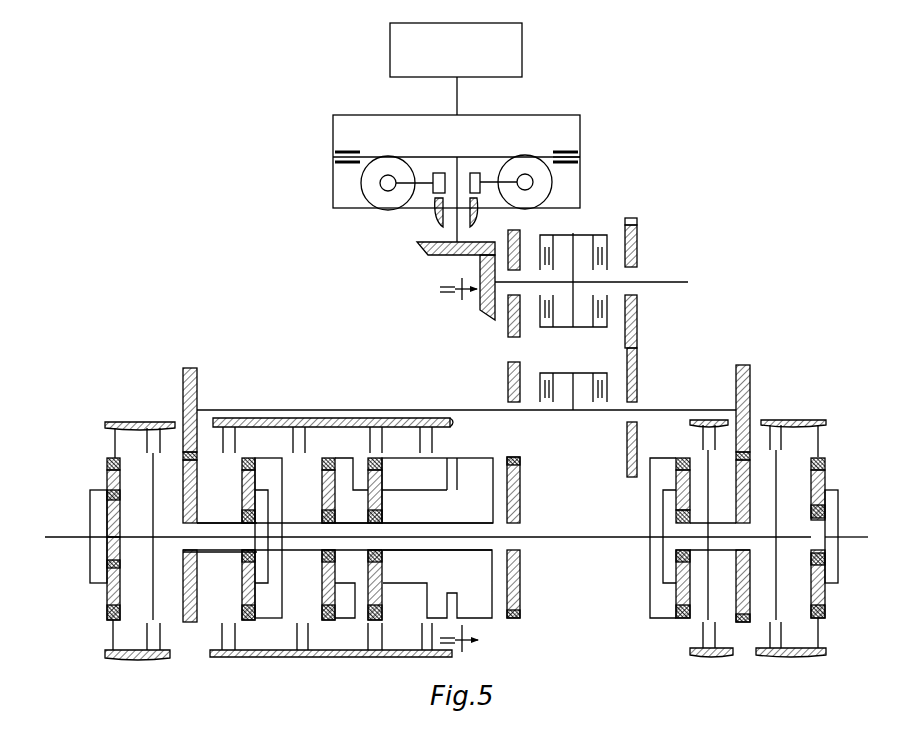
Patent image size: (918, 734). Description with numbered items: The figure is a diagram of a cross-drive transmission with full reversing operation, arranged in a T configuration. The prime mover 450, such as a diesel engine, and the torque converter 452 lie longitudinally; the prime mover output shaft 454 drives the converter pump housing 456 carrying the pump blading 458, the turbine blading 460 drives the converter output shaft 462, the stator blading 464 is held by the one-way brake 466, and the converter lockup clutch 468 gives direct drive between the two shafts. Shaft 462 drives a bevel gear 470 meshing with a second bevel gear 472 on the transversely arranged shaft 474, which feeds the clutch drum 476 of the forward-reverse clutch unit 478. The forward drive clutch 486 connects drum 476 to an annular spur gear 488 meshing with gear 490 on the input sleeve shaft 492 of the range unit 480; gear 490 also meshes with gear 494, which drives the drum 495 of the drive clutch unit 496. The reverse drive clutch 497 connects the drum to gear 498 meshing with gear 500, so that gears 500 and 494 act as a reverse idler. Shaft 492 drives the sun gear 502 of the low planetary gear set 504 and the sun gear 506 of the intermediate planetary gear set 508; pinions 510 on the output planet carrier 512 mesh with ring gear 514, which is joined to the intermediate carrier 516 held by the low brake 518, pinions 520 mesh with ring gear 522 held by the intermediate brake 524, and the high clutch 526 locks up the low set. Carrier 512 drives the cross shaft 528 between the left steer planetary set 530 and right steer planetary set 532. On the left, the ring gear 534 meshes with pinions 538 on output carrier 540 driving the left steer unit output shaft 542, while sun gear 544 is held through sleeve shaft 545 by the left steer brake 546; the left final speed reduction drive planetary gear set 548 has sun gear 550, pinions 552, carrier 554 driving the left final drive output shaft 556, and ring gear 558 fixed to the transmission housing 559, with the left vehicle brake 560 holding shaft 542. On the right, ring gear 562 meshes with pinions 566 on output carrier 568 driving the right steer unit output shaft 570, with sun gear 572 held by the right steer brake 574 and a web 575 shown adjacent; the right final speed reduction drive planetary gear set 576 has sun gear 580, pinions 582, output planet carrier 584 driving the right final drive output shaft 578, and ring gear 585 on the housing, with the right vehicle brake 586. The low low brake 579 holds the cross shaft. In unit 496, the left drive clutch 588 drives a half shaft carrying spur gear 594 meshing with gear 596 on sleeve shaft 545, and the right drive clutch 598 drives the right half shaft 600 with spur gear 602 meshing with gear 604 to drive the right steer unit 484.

The prime mover 450 is at (518, 44).
The torque converter 452 is at (583, 165).
The prime mover output shaft 454 is at (458, 97).
The converter pump housing 456 is at (580, 190).
The pump blading 458 is at (543, 198).
The turbine blading 460 is at (518, 163).
The converter output shaft 462 is at (455, 229).
The stator blading 464 is at (495, 180).
The one-way brake 466 is at (470, 178).
The converter lockup clutch 468 is at (570, 152).
The bevel gear 470 is at (424, 252).
The second bevel gear 472 is at (486, 318).
The transversely arranged shaft 474 is at (675, 283).
The clutch drum 476 is at (594, 233).
The forward-reverse clutch unit 478 is at (632, 225).
The range unit 480 is at (372, 662).
The right steer unit 484 is at (716, 659).
The forward drive clutch 486 is at (540, 243).
The annular spur gear 488 is at (488, 260).
The annular spur gear 490 is at (522, 490).
The input sleeve shaft 492 is at (460, 520).
The annular spur gear 494 is at (510, 375).
The drum 495 is at (568, 373).
The drive clutch unit 496 is at (640, 393).
The reverse drive clutch 497 is at (605, 250).
The annular spur gear 498 is at (640, 258).
The annular spur gear 500 is at (638, 360).
The sun gear 502 is at (331, 550).
The low planetary gear set 504 is at (340, 475).
The sun gear 506 is at (380, 549).
The intermediate planetary gear set 508 is at (384, 505).
The pinions 510 is at (336, 494).
The output planet carrier 512 is at (323, 462).
The ring gear 514 is at (336, 455).
The intermediate carrier 516 is at (383, 481).
The low brake 518 is at (413, 420).
The pinions 520 is at (382, 463).
The ring gear 522 is at (390, 417).
The intermediate brake 524 is at (365, 430).
The high clutch 526 is at (457, 473).
The cross shaft 528 is at (578, 537).
The left steer planetary set 530 is at (241, 500).
The right steer planetary set 532 is at (675, 515).
The left steer ring gear 534 is at (240, 456).
The pinions 538 is at (242, 468).
The output carrier 540 is at (268, 483).
The left steer unit output shaft 542 is at (223, 552).
The sun gear 544 is at (243, 567).
The sleeve shaft 545 is at (197, 525).
The left steer brake 546 is at (213, 423).
The left final speed reduction drive planetary gear set 548 is at (105, 475).
The sun gear 550 is at (122, 550).
The pinions 552 is at (120, 500).
The carrier 554 is at (90, 493).
The left final drive output shaft 556 is at (72, 540).
The ring gear 558 is at (112, 458).
The transmission housing 559 is at (128, 421).
The left vehicle brake 560 is at (167, 433).
The right steer ring gear 562 is at (681, 457).
The pinions 566 is at (675, 500).
The output carrier 568 is at (672, 484).
The right steer unit output shaft 570 is at (762, 537).
The sun gear 572 is at (673, 527).
The right steer brake 574 is at (722, 433).
The gear web 575 is at (710, 560).
The right final speed reduction drive planetary gear set 576 is at (826, 464).
The right final drive output shaft 578 is at (855, 540).
The low low brake 579 is at (305, 445).
The sun gear 580 is at (812, 560).
The pinions 582 is at (811, 490).
The output planet carrier 584 is at (832, 490).
The ring gear 585 is at (820, 440).
The right vehicle brake 586 is at (788, 422).
The left drive clutch 588 is at (545, 378).
The spur gear 594 is at (197, 382).
The spur gear 596 is at (185, 487).
The right drive clutch 598 is at (610, 386).
The right half shaft 600 is at (690, 410).
The spur gear 602 is at (751, 372).
The spur gear 604 is at (752, 470).